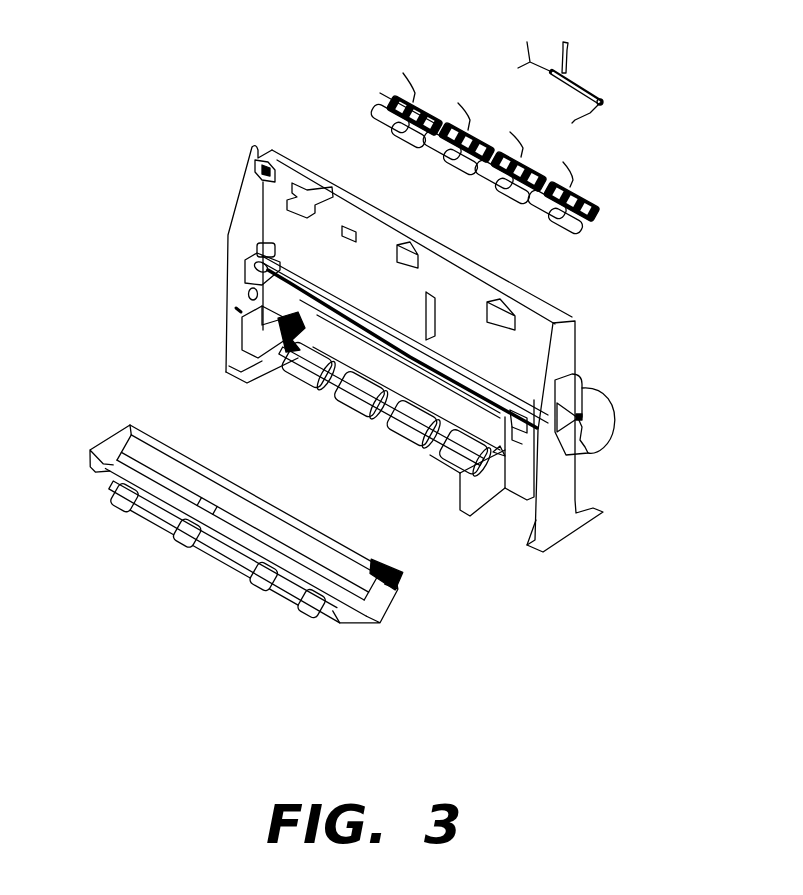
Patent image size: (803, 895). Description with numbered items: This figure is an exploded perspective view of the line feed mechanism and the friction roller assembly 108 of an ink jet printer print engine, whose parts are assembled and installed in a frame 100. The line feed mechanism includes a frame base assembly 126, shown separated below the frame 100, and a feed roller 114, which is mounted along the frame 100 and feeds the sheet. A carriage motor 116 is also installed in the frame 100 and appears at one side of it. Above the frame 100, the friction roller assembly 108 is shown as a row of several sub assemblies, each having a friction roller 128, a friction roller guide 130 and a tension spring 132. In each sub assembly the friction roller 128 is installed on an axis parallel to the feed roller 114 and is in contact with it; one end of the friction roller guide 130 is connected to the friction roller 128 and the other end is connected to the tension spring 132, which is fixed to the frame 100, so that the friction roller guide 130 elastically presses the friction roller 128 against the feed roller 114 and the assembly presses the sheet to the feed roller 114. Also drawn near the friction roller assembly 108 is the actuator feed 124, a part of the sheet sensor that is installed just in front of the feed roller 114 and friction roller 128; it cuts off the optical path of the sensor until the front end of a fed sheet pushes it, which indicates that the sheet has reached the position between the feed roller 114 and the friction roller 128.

The frame 100 is at (570, 352).
The friction roller assembly 108 is at (383, 80).
The feed roller 114 is at (405, 430).
The carriage motor 116 is at (600, 425).
The actuator feed 124 is at (585, 93).
The frame base assembly 126 is at (100, 420).
The friction roller 128 is at (527, 175).
The friction roller guide 130 is at (600, 198).
The tension spring 132 is at (575, 172).